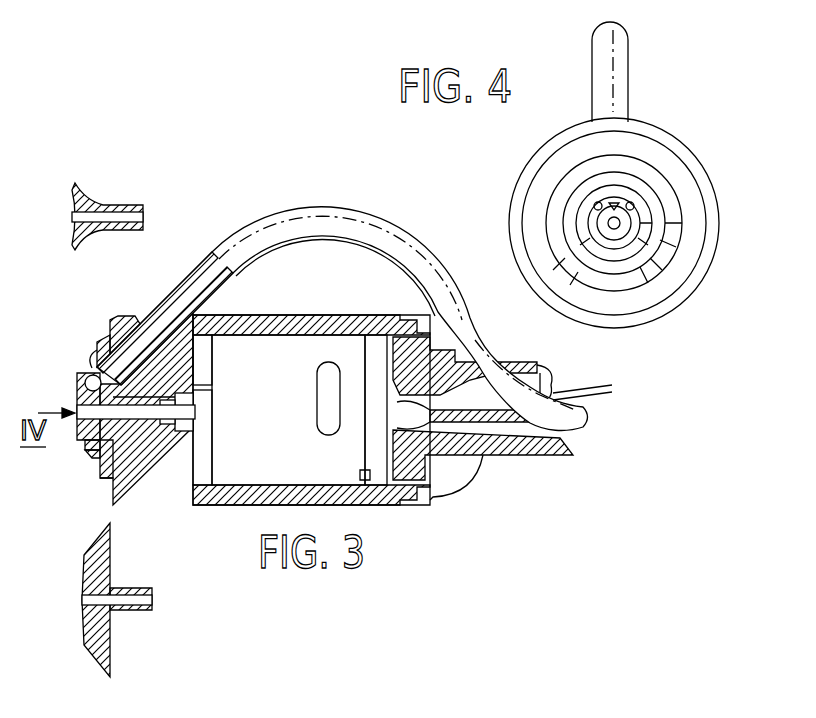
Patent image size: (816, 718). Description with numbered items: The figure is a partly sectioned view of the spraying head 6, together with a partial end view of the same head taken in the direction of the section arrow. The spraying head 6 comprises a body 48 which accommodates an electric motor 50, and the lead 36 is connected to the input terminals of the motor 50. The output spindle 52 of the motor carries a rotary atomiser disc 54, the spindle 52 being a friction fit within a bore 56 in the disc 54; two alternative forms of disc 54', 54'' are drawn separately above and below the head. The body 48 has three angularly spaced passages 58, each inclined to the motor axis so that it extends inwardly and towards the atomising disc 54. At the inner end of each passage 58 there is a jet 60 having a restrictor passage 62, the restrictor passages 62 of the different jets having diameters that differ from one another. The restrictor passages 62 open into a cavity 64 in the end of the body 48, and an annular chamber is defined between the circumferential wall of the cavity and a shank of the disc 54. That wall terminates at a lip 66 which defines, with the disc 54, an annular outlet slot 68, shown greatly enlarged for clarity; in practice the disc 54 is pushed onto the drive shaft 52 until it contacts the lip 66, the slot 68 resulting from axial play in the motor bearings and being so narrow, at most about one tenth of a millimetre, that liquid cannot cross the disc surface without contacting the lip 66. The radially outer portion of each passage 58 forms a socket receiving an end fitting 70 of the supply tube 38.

In FIG. 3, the spraying head 6 is at (230, 510).
In FIG. 3, the lead 36 is at (590, 393).
In FIG. 3, the supply tube 38 is at (582, 430).
In FIG. 4, the supply tube 38 is at (618, 63).
In FIG. 3, the body 48 is at (306, 315).
In FIG. 3, the electric motor 50 is at (299, 410).
In FIG. 3, the output spindle 52 is at (158, 460).
In FIG. 4, the output spindle 52 is at (608, 222).
In FIG. 3, the rotary atomiser disc 54 is at (59, 389).
In FIG. 3, the rotary atomiser disc 54' is at (142, 600).
In FIG. 3, the rotary atomiser disc 54'' is at (121, 202).
In FIG. 3, the bore 56 is at (78, 408).
In FIG. 3, the passage 58 is at (105, 348).
In FIG. 3, the jet 60 is at (92, 375).
In FIG. 4, the jet 60 is at (620, 200).
In FIG. 3, the restrictor passage 62 is at (96, 350).
In FIG. 3, the cavity 64 is at (100, 450).
In FIG. 3, the lip 66 is at (90, 452).
In FIG. 4, the lip 66 is at (614, 245).
In FIG. 3, the annular outlet slot 68 is at (85, 443).
In FIG. 3, the end fitting 70 is at (128, 318).